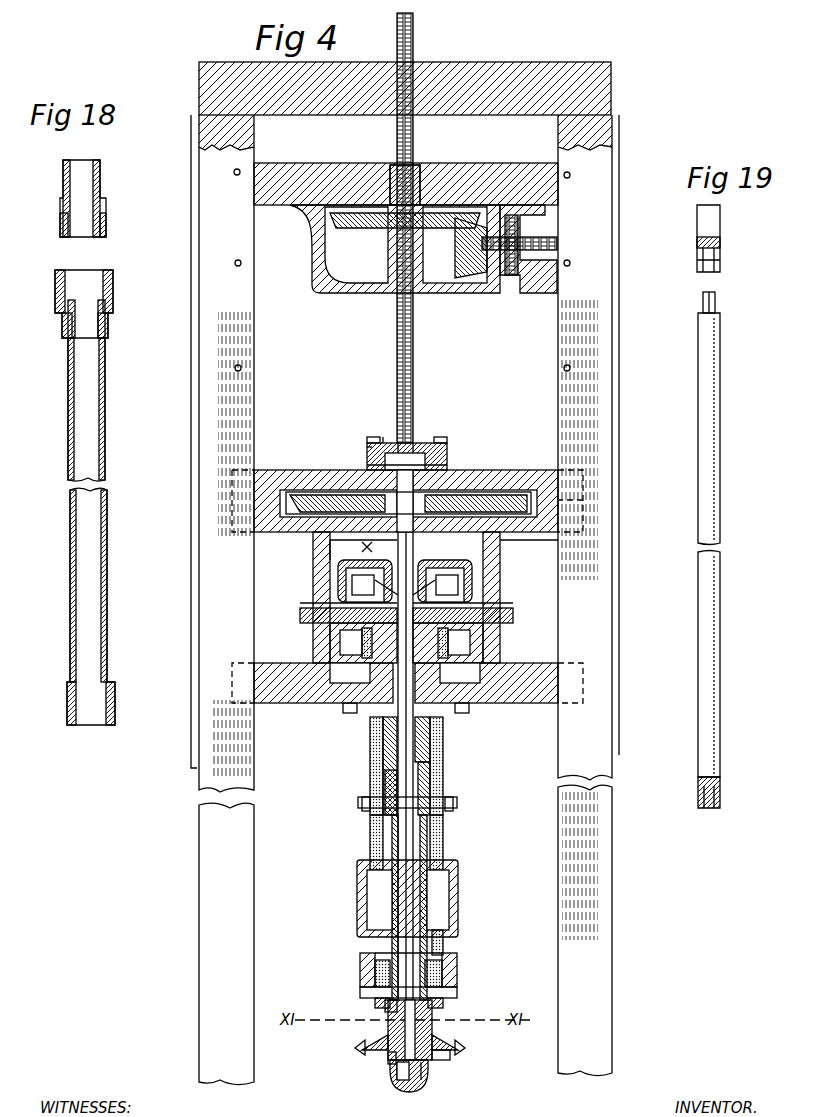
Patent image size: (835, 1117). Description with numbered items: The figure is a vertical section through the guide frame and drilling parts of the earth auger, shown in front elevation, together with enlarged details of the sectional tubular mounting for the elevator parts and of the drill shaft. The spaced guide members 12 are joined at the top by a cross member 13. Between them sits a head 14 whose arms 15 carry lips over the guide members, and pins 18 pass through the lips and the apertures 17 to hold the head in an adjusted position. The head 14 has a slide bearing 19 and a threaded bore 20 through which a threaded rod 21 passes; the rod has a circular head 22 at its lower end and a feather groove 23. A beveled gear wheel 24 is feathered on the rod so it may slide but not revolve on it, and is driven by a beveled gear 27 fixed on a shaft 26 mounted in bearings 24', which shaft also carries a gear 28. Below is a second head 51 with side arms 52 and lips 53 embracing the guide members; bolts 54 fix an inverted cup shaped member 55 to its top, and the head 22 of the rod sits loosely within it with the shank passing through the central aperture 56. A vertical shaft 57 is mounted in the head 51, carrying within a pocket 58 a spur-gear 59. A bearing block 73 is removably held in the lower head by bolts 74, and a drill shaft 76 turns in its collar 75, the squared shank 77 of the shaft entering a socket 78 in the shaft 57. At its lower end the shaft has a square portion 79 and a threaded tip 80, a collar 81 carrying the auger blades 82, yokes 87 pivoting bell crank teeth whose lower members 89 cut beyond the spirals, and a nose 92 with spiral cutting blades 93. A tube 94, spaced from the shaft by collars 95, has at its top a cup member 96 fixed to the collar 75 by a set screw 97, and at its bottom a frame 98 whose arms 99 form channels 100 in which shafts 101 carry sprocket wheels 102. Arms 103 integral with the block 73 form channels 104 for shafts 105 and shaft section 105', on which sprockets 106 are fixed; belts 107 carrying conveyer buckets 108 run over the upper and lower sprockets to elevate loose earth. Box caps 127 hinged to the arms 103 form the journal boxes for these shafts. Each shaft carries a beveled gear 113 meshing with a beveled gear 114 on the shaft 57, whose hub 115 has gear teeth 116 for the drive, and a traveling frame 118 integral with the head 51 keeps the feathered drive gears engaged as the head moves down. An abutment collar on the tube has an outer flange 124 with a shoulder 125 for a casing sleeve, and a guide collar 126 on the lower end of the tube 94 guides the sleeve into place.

In FIG. 4, the guide members 12 is at (602, 390).
In FIG. 4, the cross member 13 is at (565, 72).
In FIG. 4, the head 14 is at (325, 163).
In FIG. 4, the arms 15 is at (540, 163).
In FIG. 4, the apertures 17 is at (403, 315).
In FIG. 4, the pins 18 is at (235, 176).
In FIG. 4, the slide bearing 19 is at (395, 249).
In FIG. 4, the threaded bore 20 is at (397, 173).
In FIG. 4, the threaded rod 21 is at (413, 143).
In FIG. 4, the circular head 22 is at (410, 453).
In FIG. 4, the feather groove 23 is at (413, 353).
In FIG. 4, the beveled gear wheel 24 is at (405, 237).
In FIG. 4, the bearings 24' is at (538, 261).
In FIG. 4, the shaft 26 is at (522, 244).
In FIG. 4, the beveled gear 27 is at (458, 268).
In FIG. 4, the gear 28 is at (513, 213).
In FIG. 4, the head 51 is at (447, 448).
In FIG. 4, the side arms 52 is at (288, 472).
In FIG. 4, the lips 53 is at (255, 485).
In FIG. 4, the bolts 54 is at (440, 436).
In FIG. 4, the inverted cup shaped member 55 is at (367, 447).
In FIG. 4, the central aperture 56 is at (387, 438).
In FIG. 4, the vertical shaft 57 is at (372, 477).
In FIG. 4, the pocket 58 is at (527, 490).
In FIG. 4, the spur-gear 59 is at (505, 487).
In FIG. 4, the bearing block 73 is at (367, 717).
In FIG. 4, the bolts 74 is at (343, 708).
In FIG. 4, the collar 75 is at (370, 757).
In FIG. 4, the drill shaft 76 is at (443, 720).
In FIG. 19, the drill shaft 76 is at (713, 385).
In FIG. 4, the squared shank 77 is at (393, 595).
In FIG. 19, the squared shank 77 is at (715, 302).
In FIG. 19, the socket 78 is at (720, 257).
In FIG. 4, the square portion 79 is at (428, 1030).
In FIG. 4, the threaded tip 80 is at (422, 1072).
In FIG. 4, the collar 81 is at (388, 1050).
In FIG. 4, the auger blades 82 is at (437, 1058).
In FIG. 4, the yokes 87 is at (373, 1040).
In FIG. 4, the lower members 89 is at (362, 1055).
In FIG. 4, the nose 92 is at (403, 1075).
In FIG. 4, the spiral cutting blades 93 is at (415, 1085).
In FIG. 4, the tube 94 is at (428, 843).
In FIG. 18, the tube 94 is at (70, 392).
In FIG. 4, the collars 95 is at (387, 777).
In FIG. 18, the collars 95 is at (70, 343).
In FIG. 4, the cup member 96 is at (443, 760).
In FIG. 18, the cup member 96 is at (55, 300).
In FIG. 4, the set screw 97 is at (447, 740).
In FIG. 4, the frame 98 is at (433, 948).
In FIG. 4, the arms 99 is at (360, 965).
In FIG. 4, the channels 100 is at (360, 977).
In FIG. 4, the shafts 101 is at (360, 988).
In FIG. 4, the sprocket wheels 102 is at (373, 1000).
In FIG. 4, the arms 103 is at (337, 632).
In FIG. 4, the channels 104 is at (347, 645).
In FIG. 4, the shafts 105 is at (409, 609).
In FIG. 4, the shaft section 105' is at (406, 683).
In FIG. 4, the sprockets 106 is at (353, 597).
In FIG. 4, the belts 107 is at (373, 830).
In FIG. 4, the conveyer buckets 108 is at (343, 583).
In FIG. 4, the beveled gear 113 is at (327, 602).
In FIG. 4, the beveled gear 114 is at (313, 547).
In FIG. 4, the hub 115 is at (557, 537).
In FIG. 4, the gear teeth 116 is at (363, 605).
In FIG. 4, the traveling frame 118 is at (472, 597).
In FIG. 4, the outer flange 124 is at (358, 800).
In FIG. 4, the shoulder 125 is at (360, 807).
In FIG. 4, the guide collar 126 is at (358, 907).
In FIG. 4, the box caps 127 is at (300, 603).